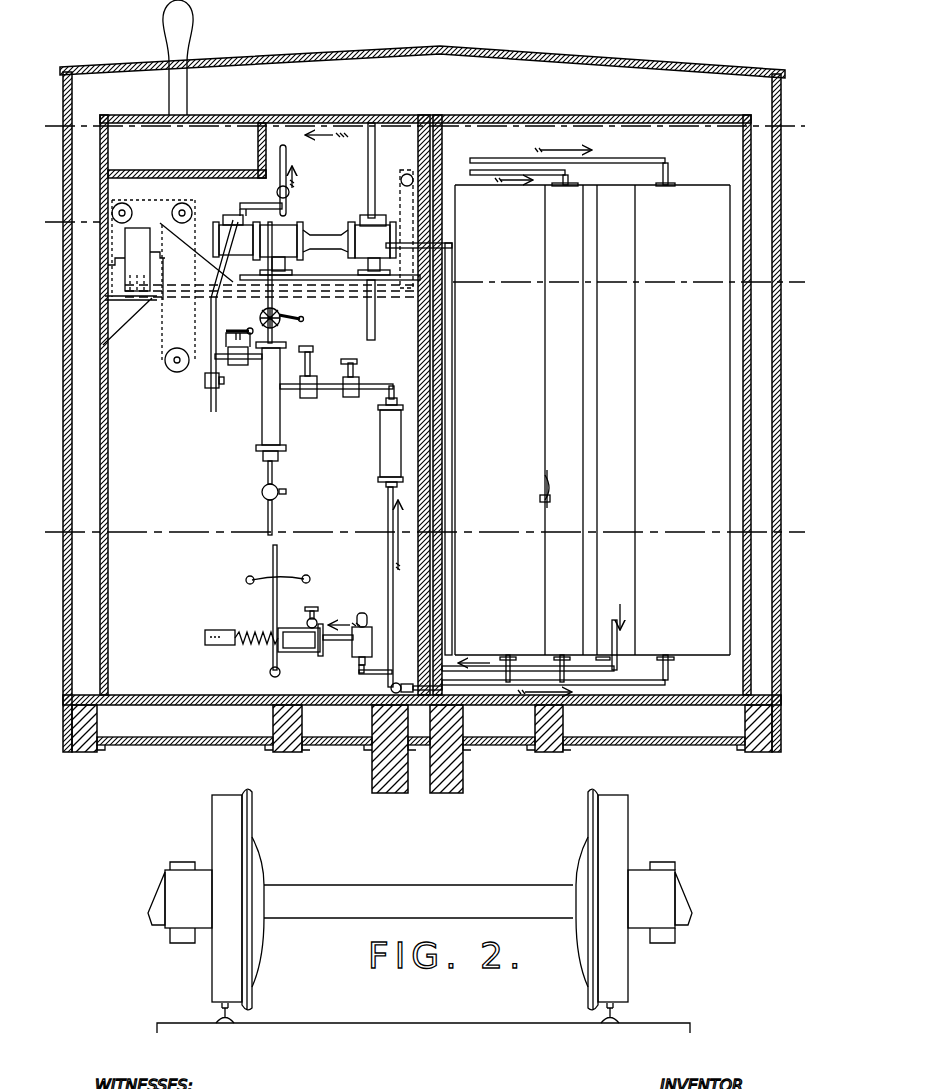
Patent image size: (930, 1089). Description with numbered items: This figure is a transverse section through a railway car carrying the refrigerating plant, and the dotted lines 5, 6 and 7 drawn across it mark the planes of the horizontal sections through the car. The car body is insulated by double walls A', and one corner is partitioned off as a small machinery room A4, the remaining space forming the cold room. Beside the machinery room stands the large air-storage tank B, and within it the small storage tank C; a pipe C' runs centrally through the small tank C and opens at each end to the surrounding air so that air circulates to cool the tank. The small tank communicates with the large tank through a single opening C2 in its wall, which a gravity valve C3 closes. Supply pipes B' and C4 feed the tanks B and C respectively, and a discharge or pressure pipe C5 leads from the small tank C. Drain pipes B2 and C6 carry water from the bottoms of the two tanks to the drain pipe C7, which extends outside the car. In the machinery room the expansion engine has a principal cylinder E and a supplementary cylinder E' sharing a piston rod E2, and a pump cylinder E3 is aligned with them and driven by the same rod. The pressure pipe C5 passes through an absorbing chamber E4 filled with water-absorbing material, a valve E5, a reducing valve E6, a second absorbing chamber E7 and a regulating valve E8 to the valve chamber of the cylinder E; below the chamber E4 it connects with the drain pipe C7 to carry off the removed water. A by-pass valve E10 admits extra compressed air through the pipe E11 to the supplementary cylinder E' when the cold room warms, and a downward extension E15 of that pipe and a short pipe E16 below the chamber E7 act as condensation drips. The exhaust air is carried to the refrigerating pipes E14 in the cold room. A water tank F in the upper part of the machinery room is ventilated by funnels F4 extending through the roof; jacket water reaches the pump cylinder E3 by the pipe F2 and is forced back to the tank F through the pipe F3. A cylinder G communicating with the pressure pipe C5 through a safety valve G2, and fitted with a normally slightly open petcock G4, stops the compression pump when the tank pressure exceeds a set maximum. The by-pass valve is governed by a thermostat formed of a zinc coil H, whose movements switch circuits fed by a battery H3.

The dotted line 7 is at (427, 130).
The dotted line 6 is at (427, 248).
The dotted line 5 is at (427, 530).
The double walls A' is at (419, 450).
The machinery room A4 is at (163, 410).
The large air-storage tank B is at (563, 410).
The funnels F4 is at (183, 33).
The tank F is at (187, 150).
The pipe F3 is at (375, 162).
The pipe F2 is at (452, 388).
The refrigerating-pipes E14 is at (288, 158).
The principal cylinder E is at (233, 236).
The supplementary cylinder E' is at (278, 248).
The piston-rod E2 is at (325, 236).
The pump-cylinder E3 is at (372, 281).
The zinc coil H is at (403, 190).
The battery H3 is at (118, 248).
The pipe E11 is at (211, 310).
The regulating-valve E8 is at (296, 323).
The second absorbing-chamber E7 is at (280, 420).
The short pipe E16 is at (272, 478).
The reducing-valve E6 is at (314, 358).
The valve E5 is at (357, 378).
The absorbing-chamber E4 is at (386, 451).
The pressure-pipe C5 is at (390, 578).
The by-pass valve E10 is at (233, 367).
The downward extension E15 is at (210, 405).
The cylinder G is at (295, 655).
The petcock G4 is at (318, 618).
The safety-valve G2 is at (372, 640).
The drain-pipe C7 is at (388, 688).
The small storage-tank C is at (592, 420).
The pipe C' is at (611, 420).
The opening C2 is at (540, 497).
The gravity-valve C3 is at (550, 497).
The supply-pipe B' is at (572, 163).
The supply-pipe C4 is at (497, 170).
The drain-pipe C6 is at (562, 662).
The drain-pipe B2 is at (615, 686).